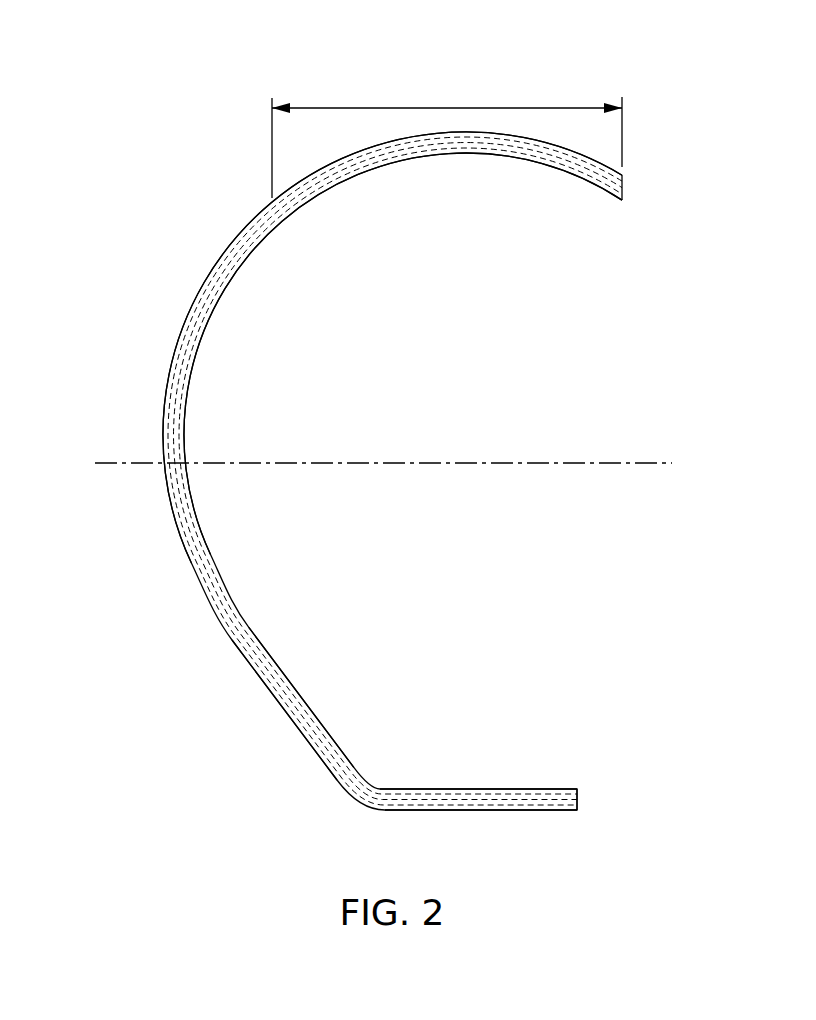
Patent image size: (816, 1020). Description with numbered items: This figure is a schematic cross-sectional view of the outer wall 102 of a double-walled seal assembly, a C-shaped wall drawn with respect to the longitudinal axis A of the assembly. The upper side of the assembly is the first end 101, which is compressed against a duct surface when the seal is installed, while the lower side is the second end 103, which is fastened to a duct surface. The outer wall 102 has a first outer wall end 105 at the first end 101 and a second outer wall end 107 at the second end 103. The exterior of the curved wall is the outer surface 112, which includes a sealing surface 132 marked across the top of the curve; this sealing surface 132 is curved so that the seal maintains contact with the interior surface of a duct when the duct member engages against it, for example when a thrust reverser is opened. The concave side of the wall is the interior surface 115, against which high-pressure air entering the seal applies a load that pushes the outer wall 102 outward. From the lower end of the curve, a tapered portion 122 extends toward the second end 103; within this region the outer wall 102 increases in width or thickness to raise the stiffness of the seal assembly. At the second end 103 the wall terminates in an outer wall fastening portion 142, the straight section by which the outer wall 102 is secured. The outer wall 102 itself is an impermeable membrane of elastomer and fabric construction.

The first end 101 is at (679, 138).
The outer wall 102 is at (201, 97).
The second end 103 is at (495, 750).
The first outer wall end 105 is at (644, 340).
The second outer wall end 107 is at (644, 589).
The outer surface 112 is at (173, 360).
The interior surface 115 is at (216, 302).
The tapered portion 122 is at (230, 636).
The sealing surface 132 is at (447, 107).
The outer wall fastening portion 142 is at (383, 820).
The longitudinal axis A is at (126, 465).